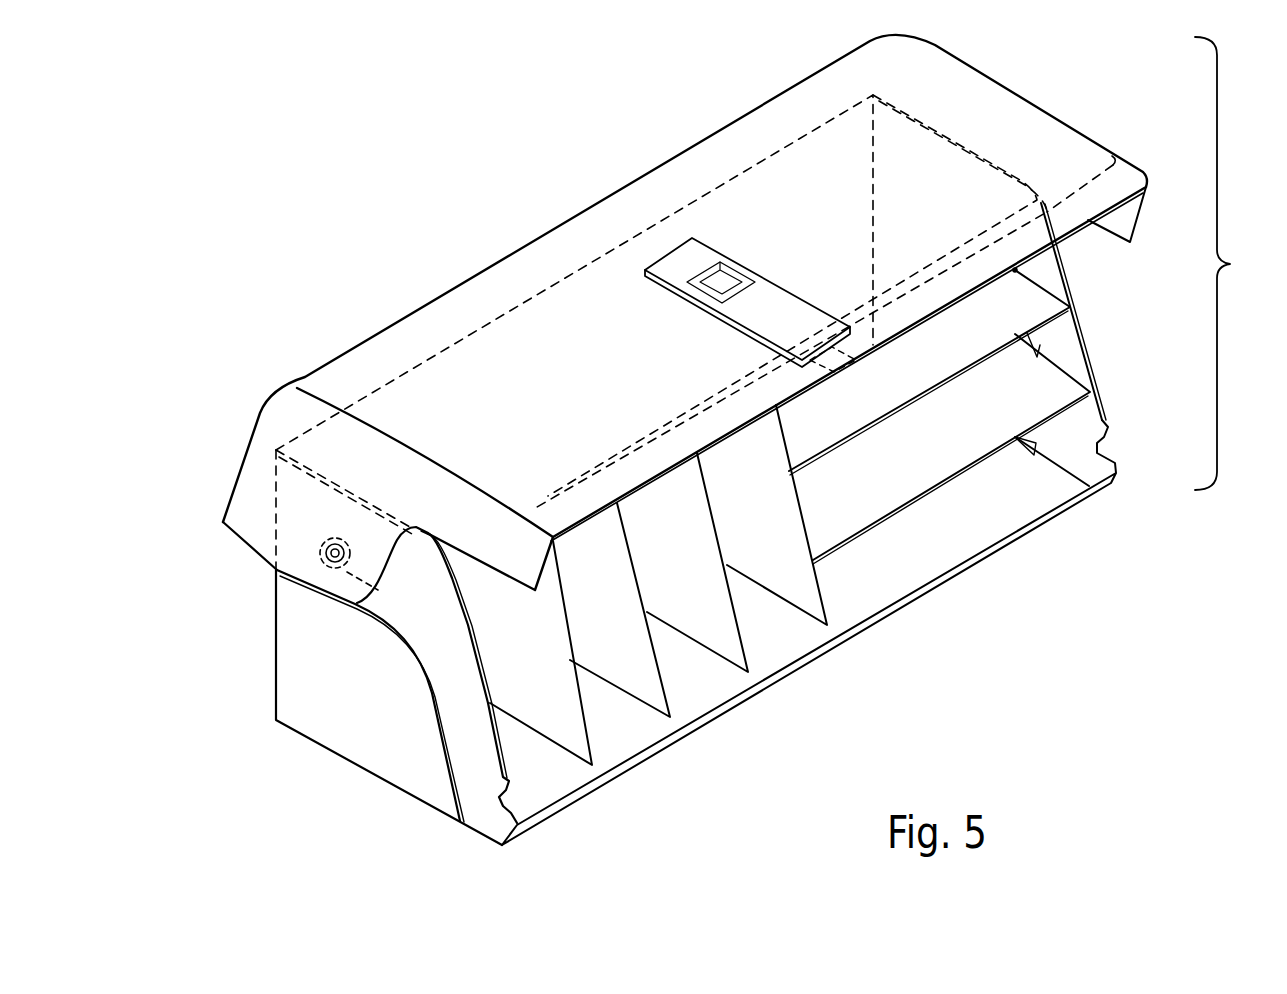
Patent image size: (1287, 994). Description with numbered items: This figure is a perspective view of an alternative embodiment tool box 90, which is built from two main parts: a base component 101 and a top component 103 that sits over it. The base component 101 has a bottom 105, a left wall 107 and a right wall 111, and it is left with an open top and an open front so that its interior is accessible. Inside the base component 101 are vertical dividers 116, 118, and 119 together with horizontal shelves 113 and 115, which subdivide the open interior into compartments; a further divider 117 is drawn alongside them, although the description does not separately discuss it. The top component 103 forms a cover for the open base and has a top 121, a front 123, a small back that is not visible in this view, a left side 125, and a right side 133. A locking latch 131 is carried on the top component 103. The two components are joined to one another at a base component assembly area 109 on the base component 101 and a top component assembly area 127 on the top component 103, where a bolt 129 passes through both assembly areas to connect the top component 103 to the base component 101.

The tool box 90 is at (1234, 263).
The base component 101 is at (1020, 623).
The top component 103 is at (412, 258).
The bottom 105 is at (1013, 517).
The left wall 107 is at (378, 753).
The base component assembly area 109 is at (391, 575).
The right wall 111 is at (1070, 358).
The horizontal shelf 113 is at (953, 475).
The horizontal shelf 115 is at (930, 390).
The vertical divider 116 is at (595, 737).
The fourth partition 117 is at (823, 597).
The vertical divider 118 is at (660, 690).
The vertical divider 119 is at (747, 645).
The top 121 is at (240, 463).
The front 123 is at (577, 247).
The left side 125 is at (257, 532).
The top component assembly area 127 is at (331, 543).
The bolt 129 is at (338, 605).
The locking latch 131 is at (763, 300).
The right side 133 is at (1125, 218).